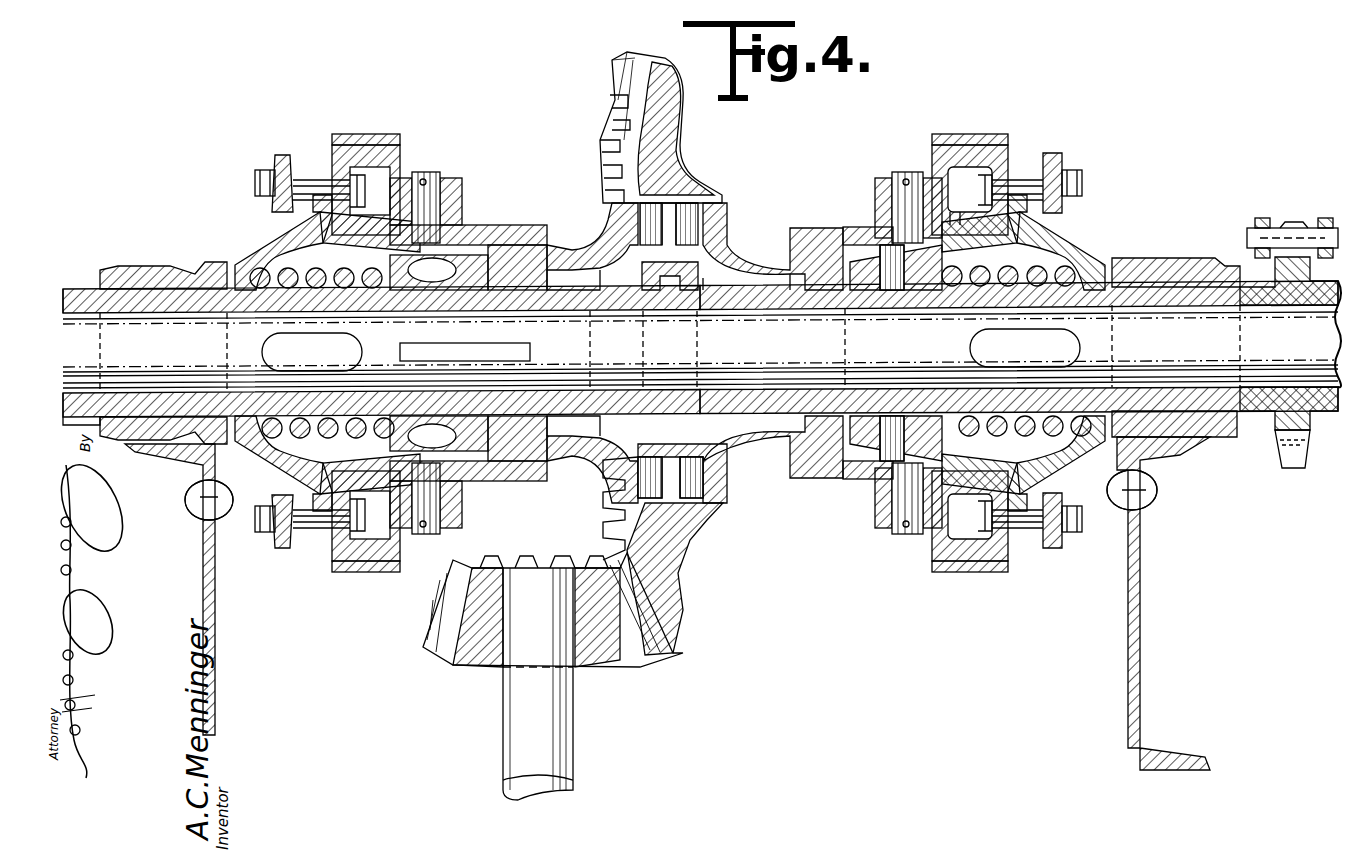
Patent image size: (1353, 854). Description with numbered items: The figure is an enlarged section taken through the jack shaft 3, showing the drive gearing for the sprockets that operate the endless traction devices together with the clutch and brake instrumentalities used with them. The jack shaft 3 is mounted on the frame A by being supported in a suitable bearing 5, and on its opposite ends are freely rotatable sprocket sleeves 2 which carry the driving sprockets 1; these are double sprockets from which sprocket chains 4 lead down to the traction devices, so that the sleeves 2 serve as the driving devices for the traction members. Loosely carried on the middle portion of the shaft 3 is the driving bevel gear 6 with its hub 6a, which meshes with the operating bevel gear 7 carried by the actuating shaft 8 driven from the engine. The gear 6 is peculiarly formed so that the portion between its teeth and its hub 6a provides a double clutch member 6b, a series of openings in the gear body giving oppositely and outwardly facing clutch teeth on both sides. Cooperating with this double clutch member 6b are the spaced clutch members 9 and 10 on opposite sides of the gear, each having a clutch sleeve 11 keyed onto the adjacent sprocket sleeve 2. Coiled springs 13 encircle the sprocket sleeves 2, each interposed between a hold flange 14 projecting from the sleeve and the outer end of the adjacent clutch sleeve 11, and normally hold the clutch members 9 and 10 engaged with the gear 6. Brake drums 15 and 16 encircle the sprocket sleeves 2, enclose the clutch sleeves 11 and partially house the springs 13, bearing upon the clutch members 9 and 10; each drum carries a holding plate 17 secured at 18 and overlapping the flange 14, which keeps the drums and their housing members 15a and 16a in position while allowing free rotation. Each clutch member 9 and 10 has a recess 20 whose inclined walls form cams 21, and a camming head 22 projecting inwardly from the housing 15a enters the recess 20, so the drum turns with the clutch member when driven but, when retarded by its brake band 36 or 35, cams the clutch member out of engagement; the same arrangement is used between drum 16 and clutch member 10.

The driving sprocket 1 is at (1272, 437).
The sprocket sleeve 2 is at (158, 407).
The jack shaft 3 is at (1020, 347).
The sprocket chain 4 is at (1317, 215).
The bearing 5 is at (174, 278).
The driving bevel gear 6 is at (657, 537).
The hub 6a is at (652, 405).
The double clutch member 6b is at (667, 230).
The operating bevel gear 7 is at (607, 663).
The actuating shaft 8 is at (552, 737).
The clutch member 9 is at (582, 262).
The clutch member 10 is at (746, 266).
The clutch sleeve 11 is at (560, 250).
The coiled spring 13 is at (307, 272).
The hold flange 14 is at (256, 240).
The brake drum 15 is at (402, 158).
The housing member 15a is at (385, 264).
The brake drum 16 is at (985, 152).
The housing member 16a is at (953, 233).
The holding plate 17 is at (282, 167).
The bolt 18 is at (268, 172).
The recess 20 is at (562, 285).
The cam 21 is at (473, 243).
The camming head 22 is at (456, 230).
The brake band 35 is at (972, 130).
The brake band 36 is at (352, 136).
The frame A is at (213, 628).